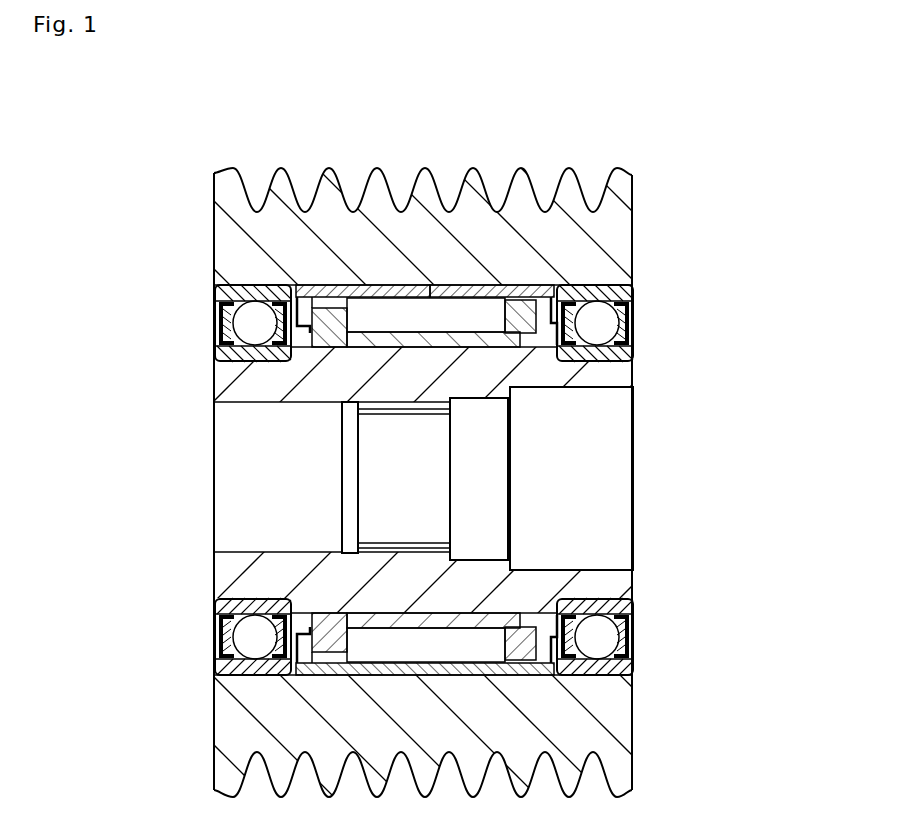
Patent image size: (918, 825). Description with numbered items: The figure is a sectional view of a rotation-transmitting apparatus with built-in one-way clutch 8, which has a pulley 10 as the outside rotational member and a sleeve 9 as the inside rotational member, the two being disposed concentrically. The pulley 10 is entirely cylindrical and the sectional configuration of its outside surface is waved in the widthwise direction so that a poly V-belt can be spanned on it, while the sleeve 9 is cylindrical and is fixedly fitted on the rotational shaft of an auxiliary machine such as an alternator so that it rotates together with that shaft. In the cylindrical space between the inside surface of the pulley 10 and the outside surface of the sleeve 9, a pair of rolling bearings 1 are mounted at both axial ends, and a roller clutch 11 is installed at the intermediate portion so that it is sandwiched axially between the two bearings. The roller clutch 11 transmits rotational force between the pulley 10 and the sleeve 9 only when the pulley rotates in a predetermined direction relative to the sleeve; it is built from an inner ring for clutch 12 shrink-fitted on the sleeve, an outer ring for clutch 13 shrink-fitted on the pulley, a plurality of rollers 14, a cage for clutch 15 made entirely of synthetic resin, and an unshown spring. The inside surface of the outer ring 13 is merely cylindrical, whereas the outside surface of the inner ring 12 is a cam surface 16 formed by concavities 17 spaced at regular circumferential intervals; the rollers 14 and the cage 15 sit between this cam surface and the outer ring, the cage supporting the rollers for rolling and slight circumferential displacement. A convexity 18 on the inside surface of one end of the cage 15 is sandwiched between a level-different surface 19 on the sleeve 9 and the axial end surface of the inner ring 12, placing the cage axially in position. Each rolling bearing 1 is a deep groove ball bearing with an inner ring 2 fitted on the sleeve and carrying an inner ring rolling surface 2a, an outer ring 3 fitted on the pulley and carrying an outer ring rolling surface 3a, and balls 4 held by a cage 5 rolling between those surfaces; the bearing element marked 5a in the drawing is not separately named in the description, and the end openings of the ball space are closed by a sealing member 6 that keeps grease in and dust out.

The rolling bearing 1 is at (459, 458).
The inner ring 2 is at (459, 475).
The inner ring rolling surface 2a is at (247, 345).
The outer ring 3 is at (635, 283).
The outer ring rolling surface 3a is at (258, 303).
The ball 4 is at (588, 344).
The cage 5 is at (489, 331).
The bearing inner ring 5a is at (635, 325).
The sealing member 6 is at (635, 308).
The rotation-transmitting apparatus with built-in one-way clutch 8 is at (651, 212).
The sleeve 9 is at (633, 397).
The pulley 10 is at (623, 248).
The roller clutch 11 is at (539, 273).
The inner ring for clutch 12 is at (400, 337).
The outer ring for clutch 13 is at (397, 295).
The roller 14 is at (459, 297).
The cage for clutch 15 is at (517, 296).
The cam surface 16 is at (482, 334).
The concavity 17 is at (412, 335).
The convexity 18 is at (317, 348).
The level-different surface 19 is at (323, 298).